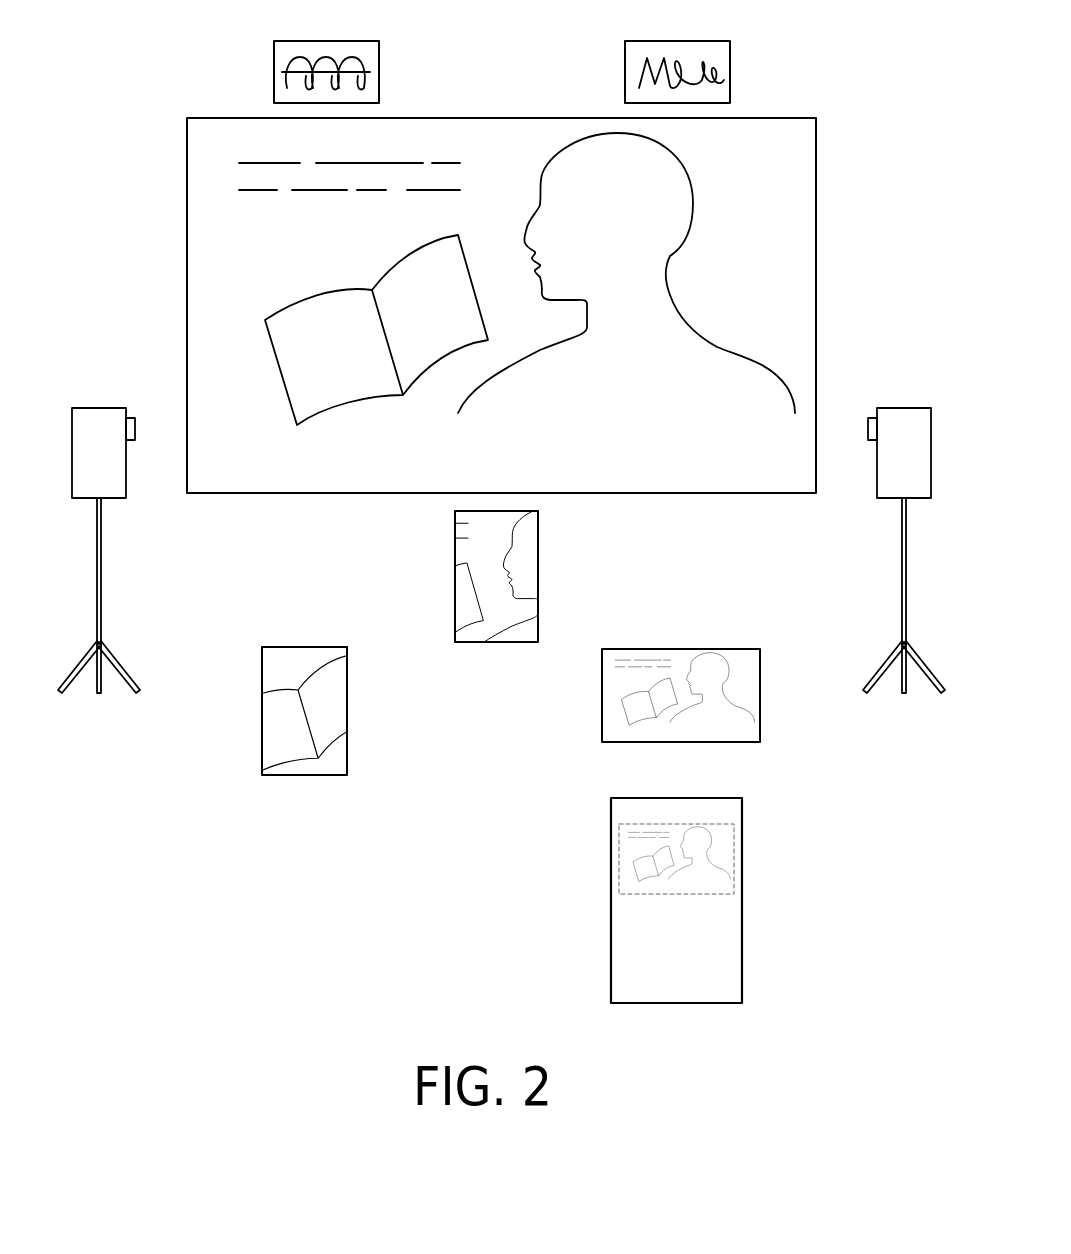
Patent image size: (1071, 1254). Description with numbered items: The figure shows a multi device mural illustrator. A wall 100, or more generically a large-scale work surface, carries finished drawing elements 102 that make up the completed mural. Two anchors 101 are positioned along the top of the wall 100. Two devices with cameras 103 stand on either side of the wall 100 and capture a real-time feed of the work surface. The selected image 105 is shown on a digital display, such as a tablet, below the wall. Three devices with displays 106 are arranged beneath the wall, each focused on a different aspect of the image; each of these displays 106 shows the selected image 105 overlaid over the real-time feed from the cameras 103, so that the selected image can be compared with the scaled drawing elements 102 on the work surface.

The wall 100 is at (187, 172).
The anchors 101 is at (303, 41).
The finished drawing elements 102 is at (596, 133).
The devices with cameras 103 is at (98, 408).
The selected image 105 is at (611, 850).
The devices with displays 106 is at (288, 647).